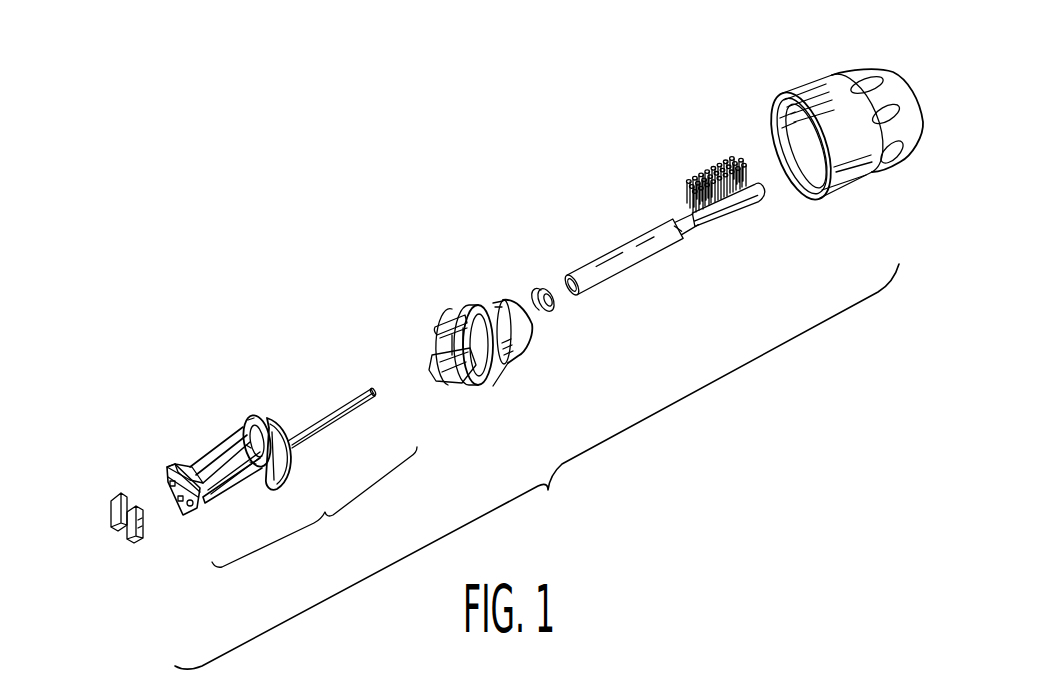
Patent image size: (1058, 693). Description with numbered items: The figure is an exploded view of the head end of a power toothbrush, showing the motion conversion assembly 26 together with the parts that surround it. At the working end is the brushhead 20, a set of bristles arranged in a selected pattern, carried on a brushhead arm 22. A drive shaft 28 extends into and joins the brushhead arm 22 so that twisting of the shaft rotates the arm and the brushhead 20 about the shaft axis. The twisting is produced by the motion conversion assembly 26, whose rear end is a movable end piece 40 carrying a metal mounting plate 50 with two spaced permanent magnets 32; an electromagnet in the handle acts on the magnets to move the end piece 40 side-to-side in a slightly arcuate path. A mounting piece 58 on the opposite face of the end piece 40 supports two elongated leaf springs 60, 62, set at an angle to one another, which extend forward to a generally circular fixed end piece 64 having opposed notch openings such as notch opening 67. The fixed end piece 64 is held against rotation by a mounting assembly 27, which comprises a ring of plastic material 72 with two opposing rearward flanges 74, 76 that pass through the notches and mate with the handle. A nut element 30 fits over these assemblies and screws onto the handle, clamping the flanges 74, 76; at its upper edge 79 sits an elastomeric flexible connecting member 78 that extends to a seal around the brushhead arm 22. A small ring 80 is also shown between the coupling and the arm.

The brushhead 20 is at (707, 183).
The brushhead arm 22 is at (638, 262).
The motion conversion assembly 26 is at (292, 461).
The mounting assembly 27 is at (467, 338).
The drive shaft 28 is at (322, 434).
The nut element 30 is at (855, 185).
The permanent magnets 32 is at (114, 520).
The movable end piece 40 is at (180, 517).
The metal mounting plate 50 is at (124, 492).
The mounting piece 58 is at (190, 466).
The leaf spring 60 is at (222, 455).
The leaf spring 62 is at (246, 477).
The fixed end piece 64 is at (256, 415).
The notch opening 67 is at (265, 427).
The ring of plastic material 72 is at (485, 383).
The flange 74 is at (440, 314).
The flange 76 is at (443, 387).
The flexible connecting member 78 is at (532, 330).
The upper edge 79 is at (899, 74).
The seal ring 80 is at (557, 302).